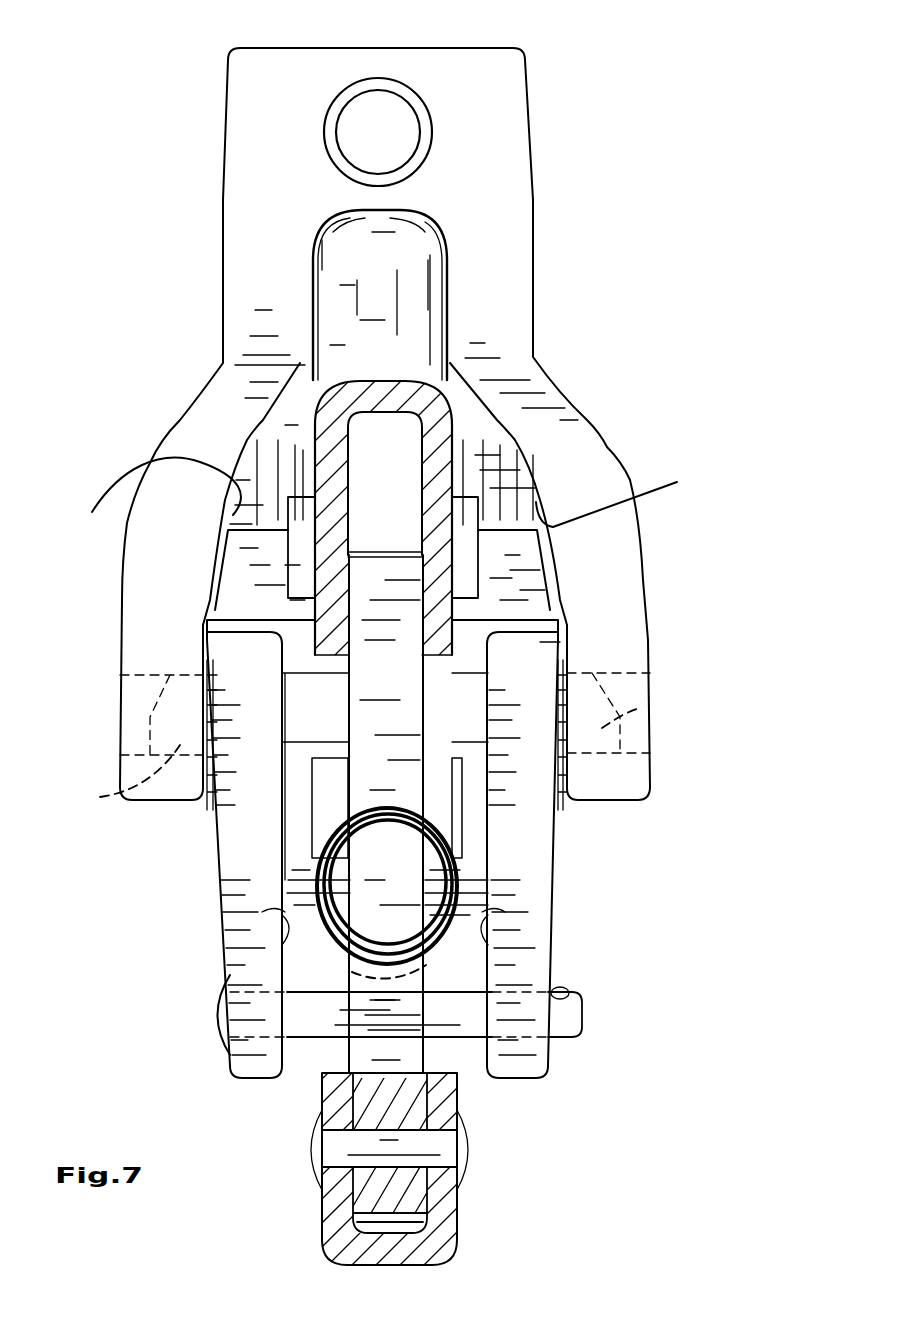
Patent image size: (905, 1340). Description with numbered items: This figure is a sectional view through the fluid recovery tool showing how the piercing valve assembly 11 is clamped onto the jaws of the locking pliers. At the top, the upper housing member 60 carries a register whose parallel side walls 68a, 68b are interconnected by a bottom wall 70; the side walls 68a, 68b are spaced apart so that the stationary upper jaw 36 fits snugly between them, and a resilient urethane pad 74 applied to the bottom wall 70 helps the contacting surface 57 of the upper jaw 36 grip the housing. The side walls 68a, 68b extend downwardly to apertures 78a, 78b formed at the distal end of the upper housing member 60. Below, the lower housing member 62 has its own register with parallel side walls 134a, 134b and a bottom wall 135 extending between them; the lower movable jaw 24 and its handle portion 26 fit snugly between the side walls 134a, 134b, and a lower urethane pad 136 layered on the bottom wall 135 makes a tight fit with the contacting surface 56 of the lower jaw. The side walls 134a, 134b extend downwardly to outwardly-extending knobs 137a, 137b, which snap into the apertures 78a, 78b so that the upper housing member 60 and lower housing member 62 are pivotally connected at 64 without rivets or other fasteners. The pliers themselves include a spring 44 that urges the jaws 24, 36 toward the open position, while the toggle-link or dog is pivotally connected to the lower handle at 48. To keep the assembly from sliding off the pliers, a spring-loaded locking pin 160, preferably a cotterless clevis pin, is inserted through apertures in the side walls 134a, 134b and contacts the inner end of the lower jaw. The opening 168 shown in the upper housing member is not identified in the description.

The piercing valve assembly 11 is at (578, 96).
The lower movable jaw 24 is at (327, 922).
The handle portion 26 is at (333, 1255).
The upper jaw 36 is at (420, 282).
The spring 44 is at (447, 922).
The pivot 48 is at (463, 1140).
The contacting surface 56 is at (463, 870).
The contacting surface 57 is at (483, 507).
The upper housing member 60 is at (530, 152).
The lower housing member 62 is at (250, 855).
The pivotal connection 64 is at (120, 710).
The side wall 68a is at (628, 494).
The side wall 68b is at (144, 502).
The bottom wall 70 is at (543, 613).
The resilient urethane pad 74 is at (503, 577).
The aperture 78a is at (630, 692).
The aperture 78b is at (127, 692).
The side wall 134a is at (535, 948).
The side wall 134b is at (275, 908).
The bottom wall 135 is at (473, 807).
The resilient urethane pad 136 is at (473, 842).
The outwardly-extending knob 137a is at (640, 708).
The outwardly-extending knob 137b is at (148, 794).
The spring-loaded locking pin 160 is at (563, 1040).
The hole 168 is at (418, 106).